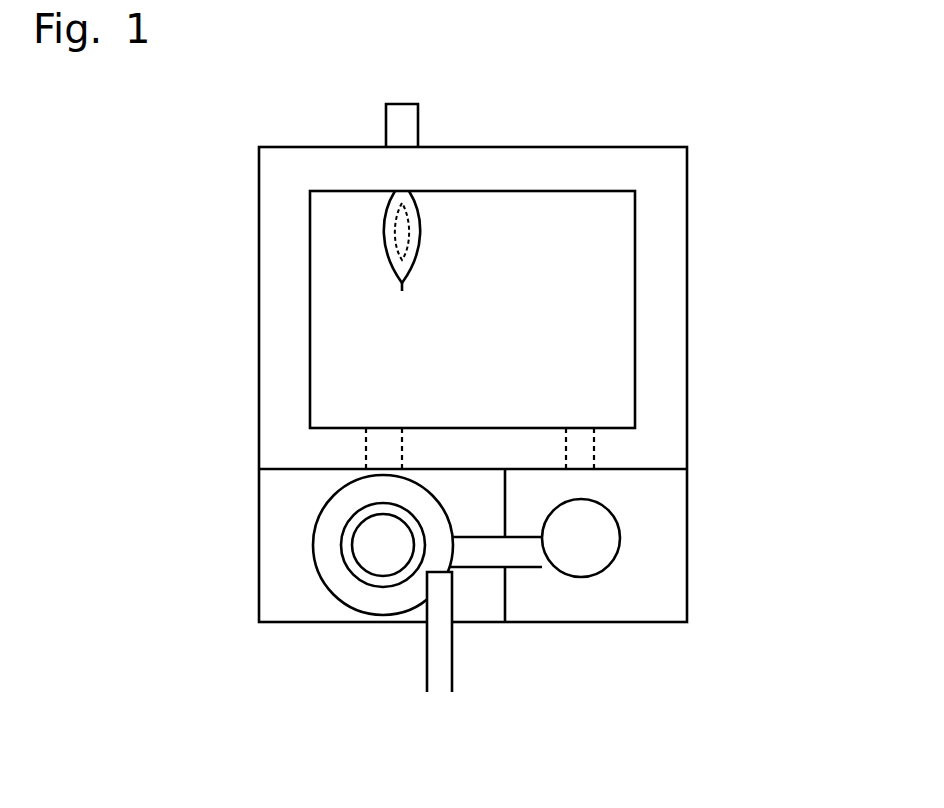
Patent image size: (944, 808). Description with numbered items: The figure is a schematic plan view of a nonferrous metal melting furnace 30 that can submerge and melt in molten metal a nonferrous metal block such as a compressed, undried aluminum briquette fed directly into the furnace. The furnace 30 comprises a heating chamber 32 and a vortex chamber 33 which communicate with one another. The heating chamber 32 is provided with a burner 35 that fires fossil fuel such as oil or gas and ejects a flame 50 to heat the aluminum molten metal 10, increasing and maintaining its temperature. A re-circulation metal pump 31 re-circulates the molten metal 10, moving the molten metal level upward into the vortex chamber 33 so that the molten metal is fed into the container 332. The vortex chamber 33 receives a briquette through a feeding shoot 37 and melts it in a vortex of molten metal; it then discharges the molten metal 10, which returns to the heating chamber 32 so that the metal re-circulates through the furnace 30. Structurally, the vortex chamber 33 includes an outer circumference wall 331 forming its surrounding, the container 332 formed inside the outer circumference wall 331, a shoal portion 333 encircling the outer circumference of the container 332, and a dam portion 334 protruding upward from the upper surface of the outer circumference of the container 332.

The nonferrous metal melting furnace 30 is at (712, 182).
The re-circulation metal pump 31 is at (580, 550).
The heating chamber 32 is at (552, 218).
The vortex chamber 33 is at (283, 510).
The outer circumference wall 331 is at (285, 575).
The container 332 is at (360, 553).
The shoal portion 333 is at (333, 577).
The dam portion 334 is at (345, 530).
The burner 35 is at (386, 133).
The feeding shoot 37 is at (422, 658).
The flame 50 is at (423, 243).
The molten metal 10 is at (568, 350).